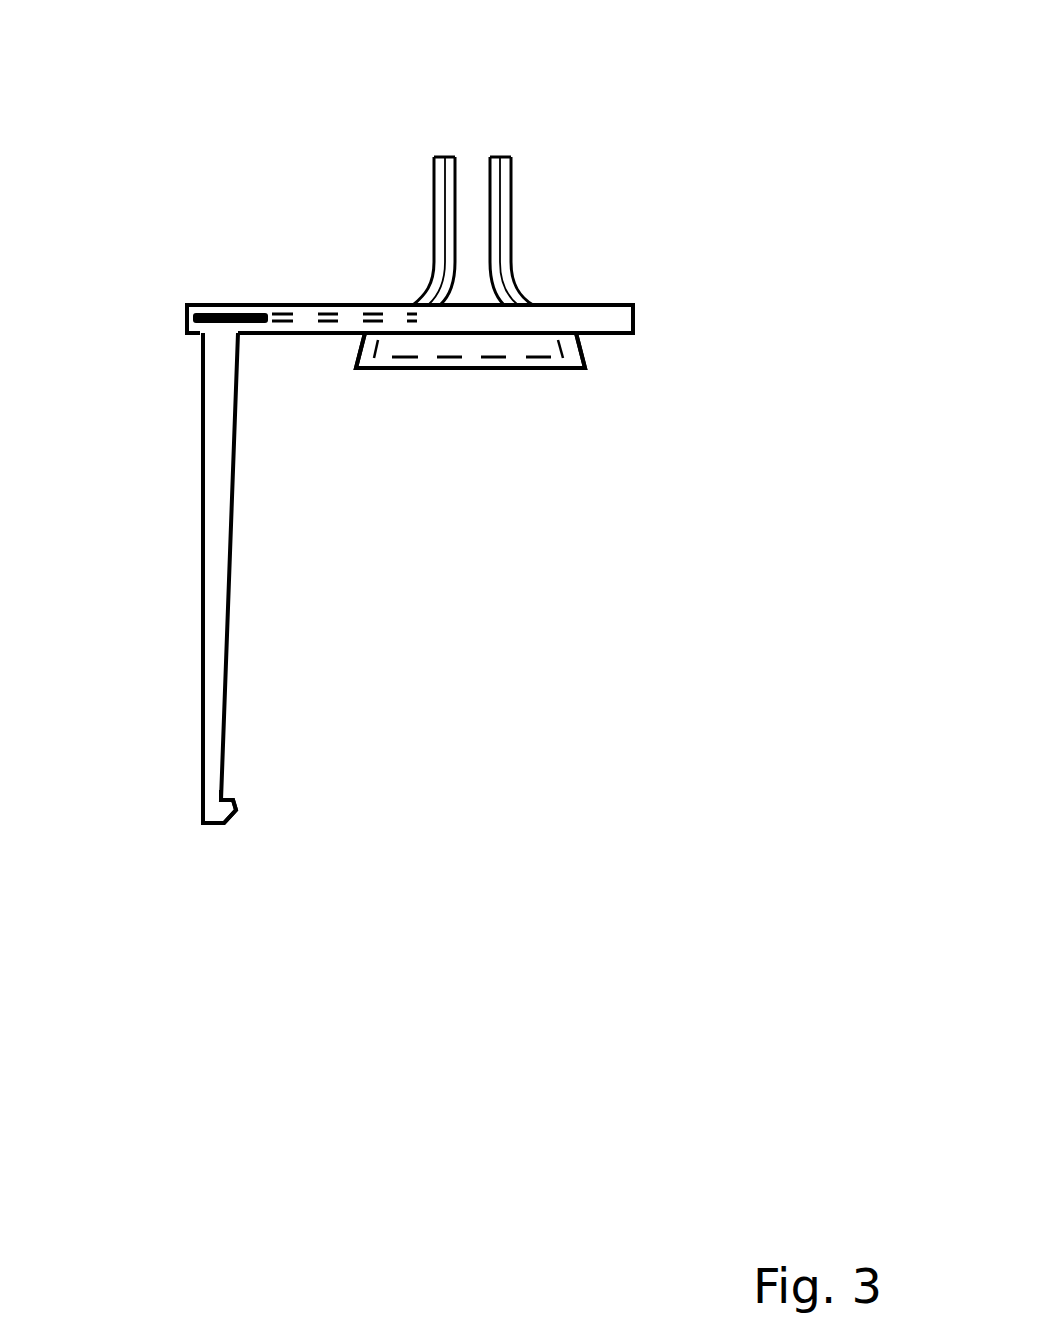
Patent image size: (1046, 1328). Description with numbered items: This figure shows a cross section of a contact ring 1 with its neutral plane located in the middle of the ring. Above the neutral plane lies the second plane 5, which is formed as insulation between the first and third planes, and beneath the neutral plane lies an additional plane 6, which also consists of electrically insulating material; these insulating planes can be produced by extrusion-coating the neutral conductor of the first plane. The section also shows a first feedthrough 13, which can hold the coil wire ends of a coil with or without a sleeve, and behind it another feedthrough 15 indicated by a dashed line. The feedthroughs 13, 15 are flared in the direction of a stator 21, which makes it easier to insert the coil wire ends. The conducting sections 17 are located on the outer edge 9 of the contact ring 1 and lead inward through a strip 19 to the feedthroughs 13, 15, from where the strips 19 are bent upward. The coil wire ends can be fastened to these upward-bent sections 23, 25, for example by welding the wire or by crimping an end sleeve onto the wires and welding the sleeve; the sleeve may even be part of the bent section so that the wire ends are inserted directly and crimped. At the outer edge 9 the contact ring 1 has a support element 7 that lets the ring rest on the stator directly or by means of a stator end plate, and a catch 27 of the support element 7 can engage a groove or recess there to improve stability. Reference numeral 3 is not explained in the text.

The contact ring 1 is at (632, 261).
The base plate 3 is at (635, 322).
The second plane 5 is at (582, 305).
The additional plane 6 is at (602, 338).
The support element 7 is at (207, 568).
The outer edge 9 is at (187, 314).
The first feedthrough 13 is at (452, 380).
The another feedthrough 15 is at (533, 378).
The conducting section 17 is at (222, 313).
The strip 19 is at (323, 313).
The stator 21 is at (340, 376).
The upward-bent section 23 is at (436, 156).
The upward-bent section 25 is at (495, 156).
The catch 27 is at (234, 805).